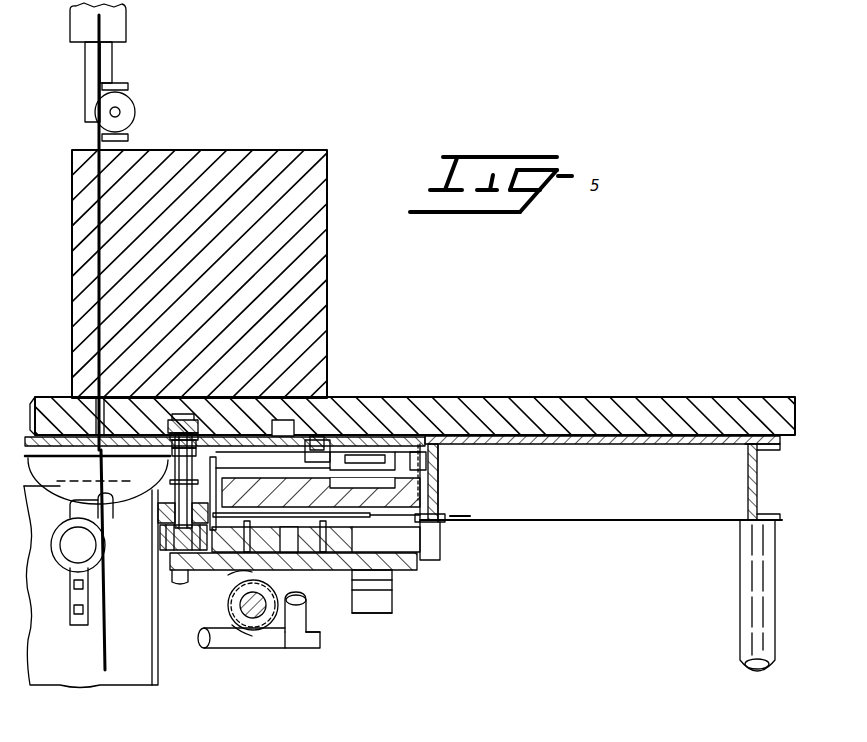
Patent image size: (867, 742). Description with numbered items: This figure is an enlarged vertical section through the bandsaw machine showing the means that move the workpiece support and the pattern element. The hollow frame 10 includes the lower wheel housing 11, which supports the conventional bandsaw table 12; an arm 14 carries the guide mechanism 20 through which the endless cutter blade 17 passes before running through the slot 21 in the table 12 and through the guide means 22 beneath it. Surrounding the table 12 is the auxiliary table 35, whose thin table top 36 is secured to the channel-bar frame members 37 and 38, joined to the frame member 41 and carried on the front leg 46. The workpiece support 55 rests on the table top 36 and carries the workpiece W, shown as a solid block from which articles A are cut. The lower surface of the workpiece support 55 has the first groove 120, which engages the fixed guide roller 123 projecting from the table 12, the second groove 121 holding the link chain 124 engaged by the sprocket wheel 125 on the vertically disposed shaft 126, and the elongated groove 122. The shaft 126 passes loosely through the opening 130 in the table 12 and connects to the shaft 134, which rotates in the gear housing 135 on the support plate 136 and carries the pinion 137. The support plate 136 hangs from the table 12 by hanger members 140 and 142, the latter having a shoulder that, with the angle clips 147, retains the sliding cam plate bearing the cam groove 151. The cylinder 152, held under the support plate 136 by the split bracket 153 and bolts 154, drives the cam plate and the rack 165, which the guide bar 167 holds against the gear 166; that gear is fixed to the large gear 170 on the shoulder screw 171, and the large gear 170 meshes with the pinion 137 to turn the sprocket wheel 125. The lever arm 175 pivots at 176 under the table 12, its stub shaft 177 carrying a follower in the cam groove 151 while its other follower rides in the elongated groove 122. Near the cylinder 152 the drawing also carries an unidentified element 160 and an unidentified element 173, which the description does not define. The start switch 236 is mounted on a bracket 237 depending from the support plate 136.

The hollow frame 10 is at (80, 698).
The lower wheel housing 11 is at (150, 684).
The bandsaw table 12 is at (70, 418).
The arm 14 is at (72, 32).
The endless cutter blade 17 is at (126, 29).
The guide mechanism 20 is at (133, 104).
The slot 21 is at (96, 420).
The guide means 22 is at (70, 578).
The auxiliary table 35 is at (626, 532).
The auxiliary table top 36 is at (564, 446).
The front transverse frame member 37 is at (758, 478).
The intermediate transverse frame member 38 is at (445, 494).
The frame member 41 is at (552, 516).
The front leg 46 is at (740, 632).
The workpiece support 55 is at (556, 378).
The first groove 120 is at (120, 412).
The second groove 121 is at (182, 410).
The elongated groove 122 is at (290, 422).
The fixed guide roller 123 is at (148, 410).
The link chain 124 is at (166, 420).
The sprocket wheel 125 is at (196, 416).
The vertically disposed shaft 126 is at (200, 426).
The opening 130 is at (216, 455).
The vertically disposed shaft 134 is at (160, 520).
The gear housing 135 is at (160, 476).
The support plate 136 is at (423, 565).
The pinion 137 is at (166, 574).
The hanger member 140 is at (273, 468).
The hanger member 142 is at (444, 541).
The angle clip 147 is at (428, 468).
The cam groove 151 is at (396, 476).
The cylinder 152 is at (276, 590).
The split bracket 153 is at (310, 602).
The bolt 154 is at (278, 650).
The bracket 160 is at (226, 620).
The rack 165 is at (230, 590).
The gear 166 is at (336, 540).
The guide bar 167 is at (208, 584).
The large gear 170 is at (372, 538).
The shoulder screw 171 is at (316, 519).
The tube 173 is at (226, 638).
The lever arm 175 is at (344, 446).
The pivot point 176 is at (306, 486).
The stub shaft 177 is at (355, 490).
The start switch 236 is at (378, 616).
The bracket 237 is at (394, 590).
The articles A is at (74, 200).
The workpiece W is at (327, 248).